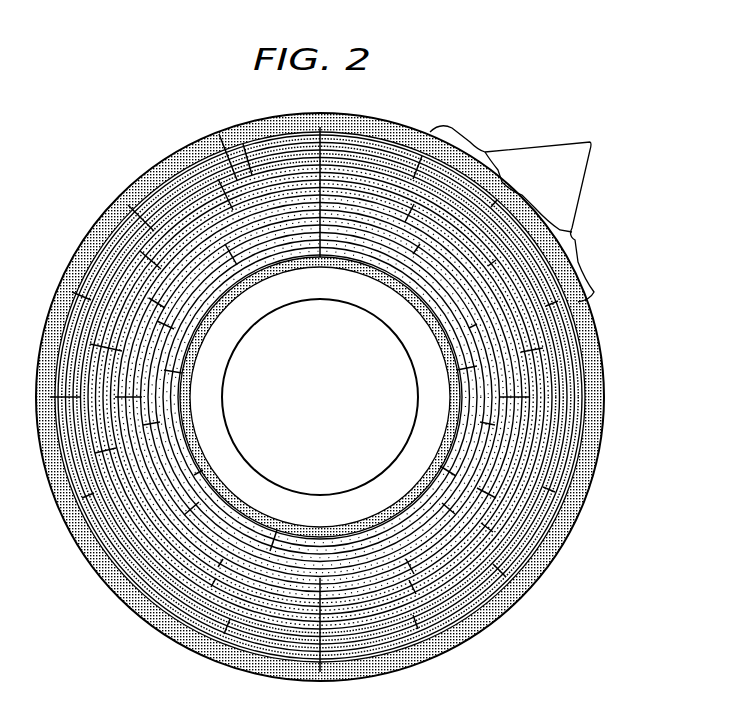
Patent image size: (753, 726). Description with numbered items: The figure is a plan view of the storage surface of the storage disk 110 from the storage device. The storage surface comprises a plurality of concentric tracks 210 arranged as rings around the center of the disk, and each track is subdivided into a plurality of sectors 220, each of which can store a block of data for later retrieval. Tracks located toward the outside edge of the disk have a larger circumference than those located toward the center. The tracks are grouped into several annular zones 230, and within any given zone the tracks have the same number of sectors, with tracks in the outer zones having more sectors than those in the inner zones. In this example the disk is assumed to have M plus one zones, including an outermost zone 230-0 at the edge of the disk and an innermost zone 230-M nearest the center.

The storage disk 110 is at (95, 183).
The concentric tracks 210 is at (487, 592).
The sectors 220 is at (528, 214).
The annular zones 230 is at (528, 432).
The outermost zone 230-0 is at (222, 134).
The innermost zone 230-M is at (252, 265).